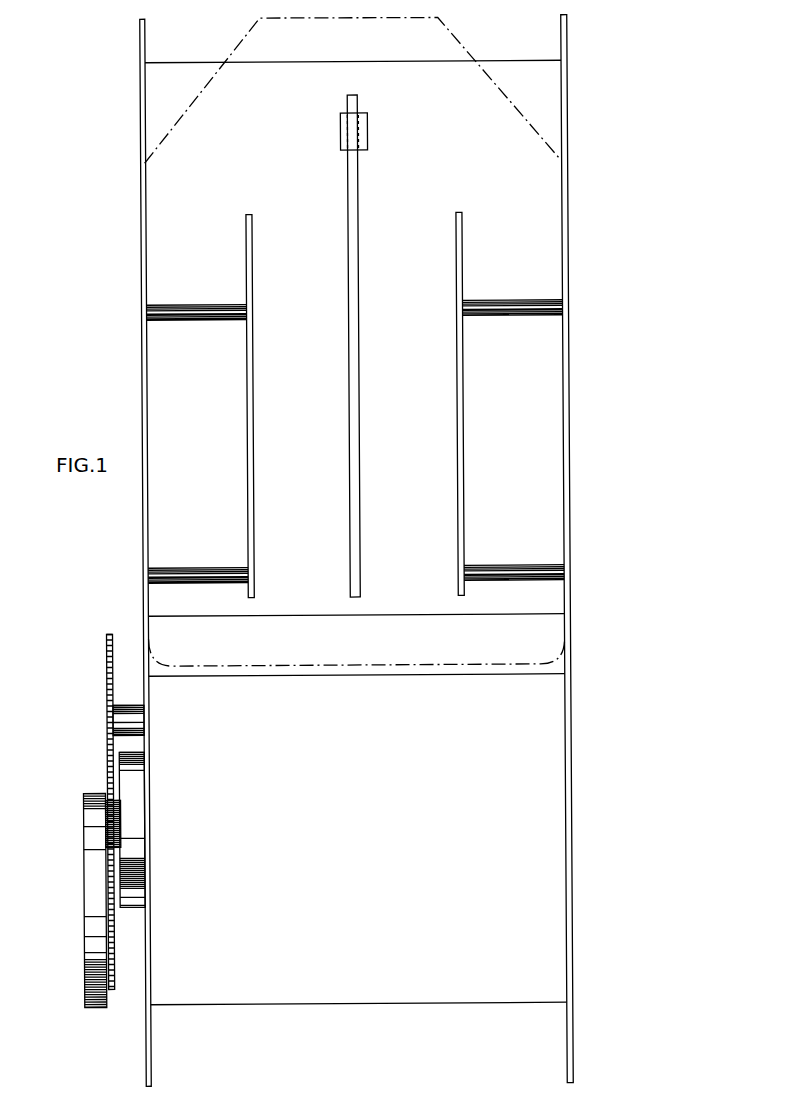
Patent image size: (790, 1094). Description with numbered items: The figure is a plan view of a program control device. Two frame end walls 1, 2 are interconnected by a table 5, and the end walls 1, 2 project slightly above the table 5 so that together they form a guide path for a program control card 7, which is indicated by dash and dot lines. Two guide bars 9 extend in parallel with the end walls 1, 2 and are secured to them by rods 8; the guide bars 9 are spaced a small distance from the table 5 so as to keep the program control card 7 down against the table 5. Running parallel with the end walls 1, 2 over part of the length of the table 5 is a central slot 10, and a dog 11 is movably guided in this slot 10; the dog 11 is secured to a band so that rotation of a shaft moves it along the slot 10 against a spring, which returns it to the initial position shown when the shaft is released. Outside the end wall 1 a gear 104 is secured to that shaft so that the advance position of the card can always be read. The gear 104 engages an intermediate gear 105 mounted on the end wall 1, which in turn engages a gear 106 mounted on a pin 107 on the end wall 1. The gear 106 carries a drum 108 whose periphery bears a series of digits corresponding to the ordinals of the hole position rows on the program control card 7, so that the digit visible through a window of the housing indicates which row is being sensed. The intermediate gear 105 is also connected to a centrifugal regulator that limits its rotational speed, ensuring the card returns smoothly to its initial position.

The frame end wall 1 is at (142, 420).
The frame end wall 2 is at (570, 460).
The table 5 is at (558, 105).
The program control card 7 is at (466, 46).
The rods 8 is at (203, 284).
The guide bars 9 is at (254, 465).
The central slot 10 is at (360, 288).
The dog 11 is at (369, 131).
The gear 104 is at (106, 672).
The intermediate gear 105 is at (114, 806).
The gear 106 is at (112, 980).
The pin 107 is at (134, 908).
The drum 108 is at (88, 958).